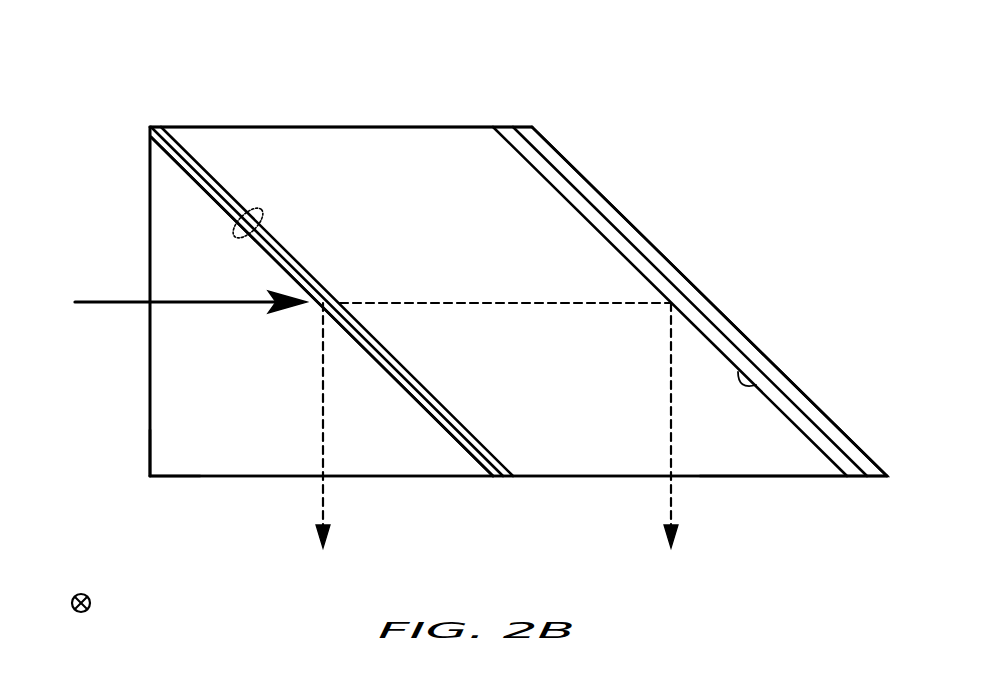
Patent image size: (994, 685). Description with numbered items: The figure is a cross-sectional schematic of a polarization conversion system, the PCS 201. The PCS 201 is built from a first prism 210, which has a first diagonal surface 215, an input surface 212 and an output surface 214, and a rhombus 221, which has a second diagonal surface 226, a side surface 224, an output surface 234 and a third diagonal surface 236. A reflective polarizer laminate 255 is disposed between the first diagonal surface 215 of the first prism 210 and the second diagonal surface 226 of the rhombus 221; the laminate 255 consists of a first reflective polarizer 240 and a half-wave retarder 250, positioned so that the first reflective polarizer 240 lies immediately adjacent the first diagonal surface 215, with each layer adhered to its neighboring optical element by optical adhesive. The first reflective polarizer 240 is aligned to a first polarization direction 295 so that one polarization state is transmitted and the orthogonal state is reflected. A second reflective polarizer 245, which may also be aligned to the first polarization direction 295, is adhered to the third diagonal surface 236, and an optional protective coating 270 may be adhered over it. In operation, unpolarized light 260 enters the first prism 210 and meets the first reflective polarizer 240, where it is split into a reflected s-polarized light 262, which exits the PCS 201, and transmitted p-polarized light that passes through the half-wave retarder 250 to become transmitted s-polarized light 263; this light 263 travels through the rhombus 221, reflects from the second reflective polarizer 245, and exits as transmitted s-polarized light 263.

The PCS 201 is at (120, 62).
The first prism 210 is at (160, 467).
The input surface 212 is at (150, 386).
The output surface 214 is at (212, 476).
The first diagonal surface 215 is at (194, 180).
The rhombus 221 is at (440, 143).
The side surface 224 is at (342, 127).
The second diagonal surface 226 is at (208, 173).
The output surface 234 is at (805, 464).
The third diagonal surface 236 is at (752, 386).
The first reflective polarizer 240 is at (161, 147).
The second reflective polarizer 245 is at (582, 197).
The half-wave retarder 250 is at (177, 147).
The reflective polarizer laminate 255 is at (262, 210).
The unpolarized light 260 is at (95, 302).
The reflected s-polarized light 262 is at (325, 512).
The transmitted s-polarized light 263 is at (673, 507).
The protective coating 270 is at (655, 252).
The first polarization direction 295 is at (90, 601).